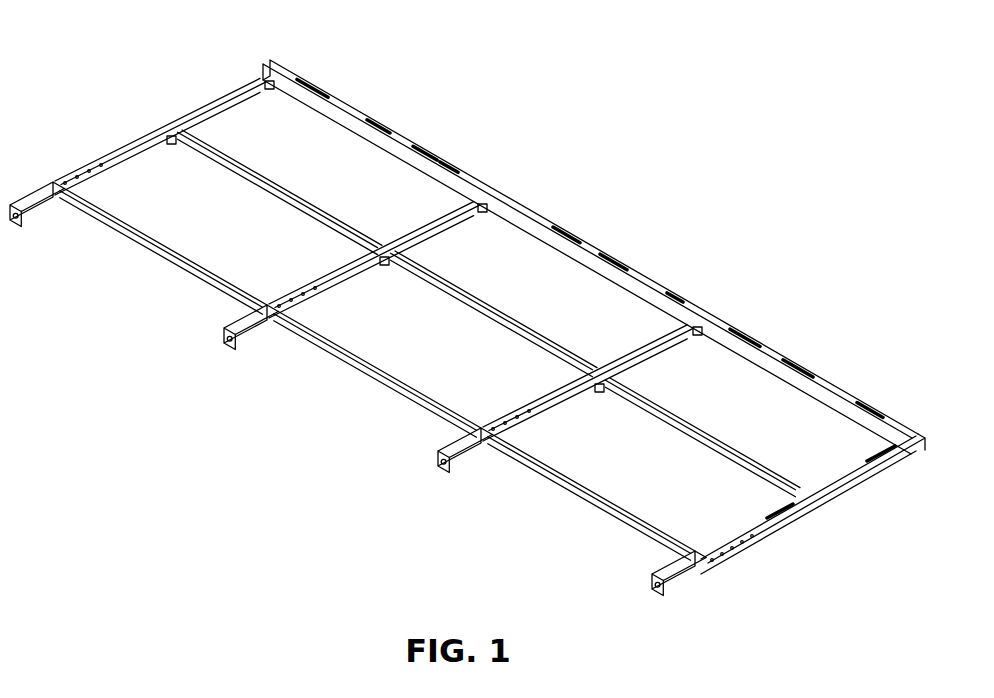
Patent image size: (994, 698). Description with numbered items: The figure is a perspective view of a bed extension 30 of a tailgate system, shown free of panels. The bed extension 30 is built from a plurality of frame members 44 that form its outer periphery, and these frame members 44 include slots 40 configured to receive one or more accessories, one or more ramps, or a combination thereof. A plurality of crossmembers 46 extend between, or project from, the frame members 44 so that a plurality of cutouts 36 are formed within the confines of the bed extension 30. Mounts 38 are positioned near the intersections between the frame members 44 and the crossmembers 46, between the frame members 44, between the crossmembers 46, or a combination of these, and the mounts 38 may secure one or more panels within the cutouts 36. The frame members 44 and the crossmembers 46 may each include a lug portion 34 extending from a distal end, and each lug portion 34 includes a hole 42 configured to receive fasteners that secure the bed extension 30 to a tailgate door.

The bed extension 30 is at (597, 146).
The lug portion 34 is at (55, 197).
The cutout 36 is at (236, 261).
The mount 38 is at (271, 62).
The slot 40 is at (375, 121).
The hole 42 is at (26, 220).
The frame member 44 is at (180, 112).
The crossmember 46 is at (270, 186).